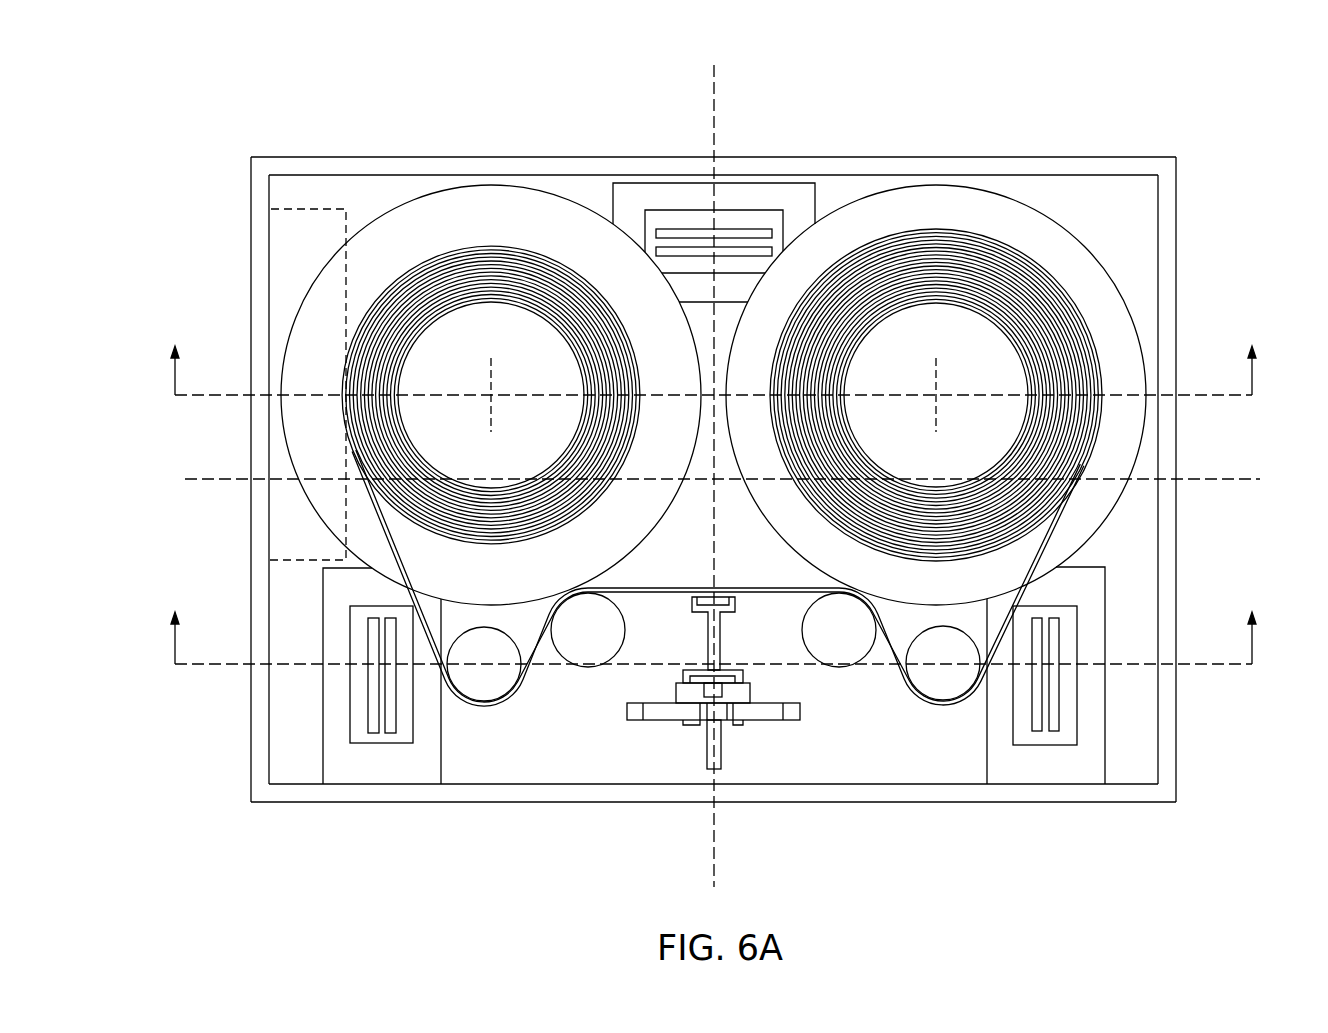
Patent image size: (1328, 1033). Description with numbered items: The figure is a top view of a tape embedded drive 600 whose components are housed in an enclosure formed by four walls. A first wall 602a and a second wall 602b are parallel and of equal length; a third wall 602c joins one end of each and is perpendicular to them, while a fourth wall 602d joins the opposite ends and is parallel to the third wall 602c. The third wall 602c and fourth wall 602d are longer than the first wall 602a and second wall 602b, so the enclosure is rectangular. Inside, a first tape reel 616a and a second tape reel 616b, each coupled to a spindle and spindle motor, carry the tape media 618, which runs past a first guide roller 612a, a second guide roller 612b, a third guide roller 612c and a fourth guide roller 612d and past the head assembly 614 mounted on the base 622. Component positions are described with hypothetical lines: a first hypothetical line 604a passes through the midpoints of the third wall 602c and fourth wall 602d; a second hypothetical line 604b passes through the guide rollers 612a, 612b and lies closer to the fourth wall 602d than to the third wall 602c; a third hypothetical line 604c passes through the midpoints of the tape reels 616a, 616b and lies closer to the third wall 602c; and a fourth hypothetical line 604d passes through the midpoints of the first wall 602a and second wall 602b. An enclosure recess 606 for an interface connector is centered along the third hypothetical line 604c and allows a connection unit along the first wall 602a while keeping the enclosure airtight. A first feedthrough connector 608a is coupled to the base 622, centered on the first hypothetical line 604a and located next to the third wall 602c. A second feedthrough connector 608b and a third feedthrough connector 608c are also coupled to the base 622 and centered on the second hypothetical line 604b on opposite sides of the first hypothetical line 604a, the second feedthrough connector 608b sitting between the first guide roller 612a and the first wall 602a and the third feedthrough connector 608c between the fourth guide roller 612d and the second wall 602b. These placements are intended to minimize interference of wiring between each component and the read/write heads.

The tape embedded drive 600 is at (178, 116).
The first wall 602a is at (250, 432).
The second wall 602b is at (1177, 443).
The third wall 602c is at (628, 155).
The fourth wall 602d is at (687, 725).
The first hypothetical line 604a is at (714, 872).
The second hypothetical line 604b is at (1195, 667).
The third hypothetical line 604c is at (1236, 398).
The fourth hypothetical line 604d is at (1227, 482).
The enclosure recess 606 is at (305, 209).
The first feedthrough connector 608a is at (749, 183).
The second feedthrough connector 608b is at (323, 700).
The third feedthrough connector 608c is at (1105, 738).
The first guide roller 612a is at (482, 678).
The second guide roller 612b is at (585, 647).
The third guide roller 612c is at (840, 650).
The fourth guide roller 612d is at (938, 680).
The head assembly 614 is at (728, 725).
The first tape reel 616a is at (491, 395).
The second tape reel 616b is at (936, 395).
The tape media 618 is at (1057, 528).
The base 622 is at (592, 740).